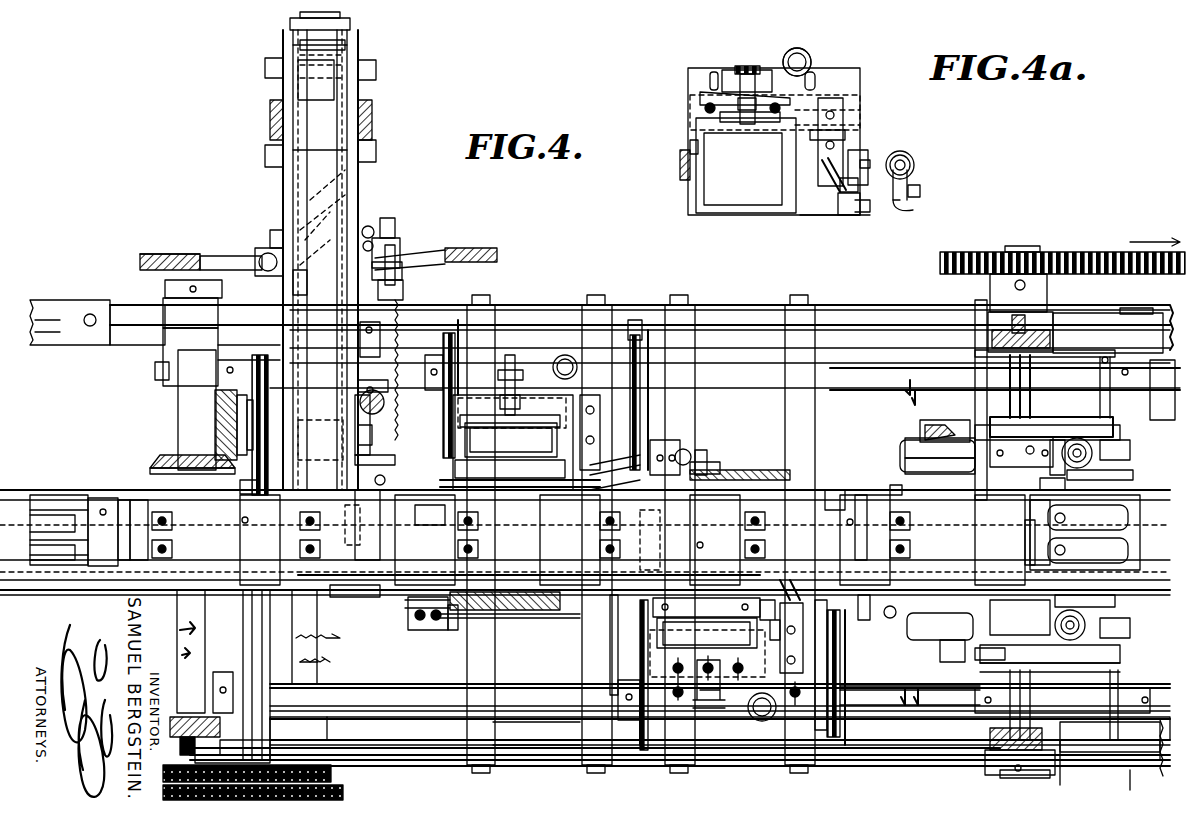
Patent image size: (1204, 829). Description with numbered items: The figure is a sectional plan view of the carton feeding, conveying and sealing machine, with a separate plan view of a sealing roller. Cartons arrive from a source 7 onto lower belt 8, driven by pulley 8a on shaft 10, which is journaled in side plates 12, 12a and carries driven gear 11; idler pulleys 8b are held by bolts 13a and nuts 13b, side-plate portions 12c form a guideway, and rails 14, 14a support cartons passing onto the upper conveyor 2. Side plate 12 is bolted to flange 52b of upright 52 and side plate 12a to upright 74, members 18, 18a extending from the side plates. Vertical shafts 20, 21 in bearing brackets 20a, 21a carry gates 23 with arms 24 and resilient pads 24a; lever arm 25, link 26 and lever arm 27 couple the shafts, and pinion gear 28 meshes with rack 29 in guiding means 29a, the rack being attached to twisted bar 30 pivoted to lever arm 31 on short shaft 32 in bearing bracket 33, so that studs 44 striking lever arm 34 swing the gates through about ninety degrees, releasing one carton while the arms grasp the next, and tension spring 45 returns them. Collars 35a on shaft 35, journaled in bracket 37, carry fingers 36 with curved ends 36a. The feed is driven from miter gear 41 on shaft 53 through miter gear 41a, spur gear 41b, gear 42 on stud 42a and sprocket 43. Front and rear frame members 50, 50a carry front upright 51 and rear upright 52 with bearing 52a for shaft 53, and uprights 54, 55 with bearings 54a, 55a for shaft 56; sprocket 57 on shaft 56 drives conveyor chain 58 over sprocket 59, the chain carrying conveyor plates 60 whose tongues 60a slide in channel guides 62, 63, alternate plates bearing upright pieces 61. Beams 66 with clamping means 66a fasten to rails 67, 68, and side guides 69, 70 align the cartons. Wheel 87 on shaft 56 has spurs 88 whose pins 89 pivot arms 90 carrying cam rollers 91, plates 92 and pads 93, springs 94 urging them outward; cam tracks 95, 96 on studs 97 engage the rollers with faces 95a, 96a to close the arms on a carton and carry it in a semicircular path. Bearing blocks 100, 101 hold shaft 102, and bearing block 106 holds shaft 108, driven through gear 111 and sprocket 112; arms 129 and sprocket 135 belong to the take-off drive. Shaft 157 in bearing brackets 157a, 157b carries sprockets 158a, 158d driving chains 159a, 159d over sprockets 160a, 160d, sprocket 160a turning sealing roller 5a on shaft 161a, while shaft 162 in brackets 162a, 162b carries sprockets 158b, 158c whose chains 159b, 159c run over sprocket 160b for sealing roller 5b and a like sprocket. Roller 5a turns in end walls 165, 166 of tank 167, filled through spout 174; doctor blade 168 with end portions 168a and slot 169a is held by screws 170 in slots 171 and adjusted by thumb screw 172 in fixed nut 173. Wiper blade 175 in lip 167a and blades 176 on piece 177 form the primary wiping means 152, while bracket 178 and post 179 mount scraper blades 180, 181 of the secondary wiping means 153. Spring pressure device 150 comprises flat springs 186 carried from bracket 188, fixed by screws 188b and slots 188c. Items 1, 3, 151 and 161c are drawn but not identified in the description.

In FIG. 4, the machine frame 1 is at (268, 158).
In FIG. 4, the upper conveyor 2 is at (392, 605).
In FIG. 4, the folding device 3 is at (915, 425).
In FIG. 4, the sealing roller 5a is at (511, 440).
In FIG. 4a, the sealing roller 5a is at (743, 169).
In FIG. 4, the sealing roller 5b is at (707, 647).
In FIG. 4, the conveyor or other source 7 is at (293, 22).
In FIG. 4, the lower belt 8 is at (375, 150).
In FIG. 4, the pulley 8a is at (360, 405).
In FIG. 4, the adjustable idler pulleys 8b is at (355, 45).
In FIG. 4, the shaft 10 is at (320, 438).
In FIG. 4, the driven gear 11 is at (255, 490).
In FIG. 4, the side plate 12 is at (283, 176).
In FIG. 4, the side plate 12a is at (360, 175).
In FIG. 4, the side plate portions 12c is at (283, 84).
In FIG. 4, the bolts 13a is at (375, 70).
In FIG. 4, the nuts 13b is at (268, 68).
In FIG. 4, the rail 14 is at (290, 38).
In FIG. 4, the rail 14a is at (358, 34).
In FIG. 4, the support member 18 is at (270, 120).
In FIG. 4, the support member 18a is at (372, 118).
In FIG. 4, the vertical shaft 20 is at (270, 250).
In FIG. 4, the bearing brackets 20a is at (275, 235).
In FIG. 4, the vertical shaft 21 is at (400, 270).
In FIG. 4, the bearing brackets 21a is at (398, 288).
In FIG. 4, the fingers or gates 23 is at (300, 280).
In FIG. 4, the arms 24 is at (140, 255).
In FIG. 4, the pads 24a is at (172, 252).
In FIG. 4, the lever arm 25 is at (317, 219).
In FIG. 4, the link 26 is at (316, 244).
In FIG. 4, the lever arm 27 is at (368, 225).
In FIG. 4, the pinion gear 28 is at (392, 240).
In FIG. 4, the rack 29 is at (395, 222).
In FIG. 4, the guiding means 29a is at (398, 248).
In FIG. 4, the twisted bar 30 is at (405, 340).
In FIG. 4, the lever arm 31 is at (377, 453).
In FIG. 4, the short shaft 32 is at (392, 478).
In FIG. 4, the bearing bracket 33 is at (380, 525).
In FIG. 4, the lever arm 34 is at (367, 522).
In FIG. 4, the vertical shaft 35 is at (360, 395).
In FIG. 4, the collars 35a is at (372, 390).
In FIG. 4, the arms or fingers 36 is at (372, 436).
In FIG. 4, the curved end portions 36a is at (465, 385).
In FIG. 4, the bearing bracket 37 is at (360, 385).
In FIG. 4, the miter gear 41 is at (160, 455).
In FIG. 4, the miter gear 41a is at (215, 420).
In FIG. 4, the spur gear 41b is at (228, 345).
In FIG. 4, the gear 42 is at (228, 380).
In FIG. 4, the stud 42a is at (215, 440).
In FIG. 4, the sprocket 43 is at (215, 398).
In FIG. 4, the studs 44 is at (250, 515).
In FIG. 4, the tension spring 45 is at (432, 515).
In FIG. 4, the front frame member 50 is at (900, 765).
In FIG. 4, the rear frame member 50a is at (115, 303).
In FIG. 4, the front upright 51 is at (205, 670).
In FIG. 4, the rear upright 52 is at (162, 338).
In FIG. 4, the bearing 52a is at (165, 312).
In FIG. 4, the flange 52b is at (225, 312).
In FIG. 4, the shaft 53 is at (170, 285).
In FIG. 4, the upright member 54 is at (990, 775).
In FIG. 4, the bearing 54a is at (1010, 778).
In FIG. 4, the upright member 55 is at (1040, 340).
In FIG. 4, the bearing 55a is at (990, 300).
In FIG. 4, the shaft 56 is at (1030, 246).
In FIG. 4, the sprocket 57 is at (1030, 535).
In FIG. 4, the upper conveyor chain 58 is at (118, 500).
In FIG. 4, the left-hand sprocket 59 is at (140, 500).
In FIG. 4, the conveyor plates 60 is at (88, 510).
In FIG. 4, the tongues 60a is at (92, 500).
In FIG. 4, the upright pieces 61 is at (40, 520).
In FIG. 4, the side guide 62 is at (340, 590).
In FIG. 4, the side guide 63 is at (840, 490).
In FIG. 4, the transverse bars or beams 66 is at (580, 678).
In FIG. 4, the clamping means 66a is at (482, 765).
In FIG. 4, the frame member or rail 67 is at (530, 760).
In FIG. 4, the frame member or rail 68 is at (650, 330).
In FIG. 4, the side guide 69 is at (612, 610).
In FIG. 4, the side guide 70 is at (898, 490).
In FIG. 4, the upright frame member 74 is at (360, 337).
In FIG. 4, the wheel 87 is at (1035, 440).
In FIG. 4, the spurs 88 is at (1045, 475).
In FIG. 4, the pins 89 is at (1045, 458).
In FIG. 4, the arms 90 is at (950, 425).
In FIG. 4, the cam rollers 91 is at (1060, 435).
In FIG. 4, the plates 92 is at (905, 440).
In FIG. 4, the pads 93 is at (905, 450).
In FIG. 4, the springs 94 is at (1075, 472).
In FIG. 4, the cam plate or track 95 is at (1135, 655).
In FIG. 4, the cam face 95a is at (1030, 655).
In FIG. 4, the cam plate or track 96 is at (1135, 425).
In FIG. 4, the cam face 96a is at (985, 425).
In FIG. 4, the studs 97 is at (1050, 360).
In FIG. 4, the bearing block 100 is at (1110, 750).
In FIG. 4, the bearing block 101 is at (1120, 320).
In FIG. 4, the shaft 102 is at (1128, 312).
In FIG. 4, the bearing block 106 is at (330, 725).
In FIG. 4, the shaft 108 is at (340, 675).
In FIG. 4, the gear 111 is at (345, 770).
In FIG. 4, the sprocket 112 is at (345, 790).
In FIG. 4, the brackets or arms 129 is at (55, 300).
In FIG. 4, the sprocket 135 is at (235, 760).
In FIG. 4, the adjustable spring pressure device 150 is at (505, 620).
In FIG. 4, the plate 151 is at (607, 538).
In FIG. 4, the flat spring members 152 is at (630, 535).
In FIG. 4a, the flat spring members 152 is at (840, 215).
In FIG. 4, the secondary wiping means 153 is at (705, 455).
In FIG. 4a, the secondary wiping means 153 is at (912, 178).
In FIG. 4, the shaft 157 is at (830, 380).
In FIG. 4, the bearing bracket 157a is at (985, 355).
In FIG. 4, the bearing bracket 157b is at (158, 372).
In FIG. 4, the large sprocket 158a is at (632, 320).
In FIG. 4, the sprocket 158b is at (836, 735).
In FIG. 4, the sprocket 158c is at (645, 760).
In FIG. 4, the sprocket 158d is at (515, 360).
In FIG. 4, the chain 159a is at (660, 330).
In FIG. 4, the chain 159b is at (840, 720).
In FIG. 4, the chain 159c is at (630, 740).
In FIG. 4, the chain 159d is at (460, 320).
In FIG. 4, the sprocket 160a is at (675, 440).
In FIG. 4a, the sprocket 160a is at (870, 150).
In FIG. 4, the sprocket 160b is at (830, 655).
In FIG. 4, the lower sprocket 160d is at (513, 442).
In FIG. 4a, the shaft 161a is at (685, 160).
In FIG. 4, the pad 161c is at (640, 625).
In FIG. 4, the shaft 162 is at (500, 680).
In FIG. 4, the bearing bracket 162a is at (1040, 698).
In FIG. 4, the bearing bracket 162b is at (178, 670).
In FIG. 4a, the end wall 165 is at (850, 135).
In FIG. 4a, the end wall 166 is at (690, 148).
In FIG. 4a, the reservoir or tank 167 is at (695, 192).
In FIG. 4a, the outwardly turned lip 167a is at (875, 210).
In FIG. 4a, the doctor blade 168 is at (690, 110).
In FIG. 4a, the extended end portions 168a is at (690, 125).
In FIG. 4a, the slot 169a is at (726, 72).
In FIG. 4a, the screws 170 is at (690, 100).
In FIG. 4a, the slots 171 is at (690, 90).
In FIG. 4a, the thumb screw 172 is at (745, 66).
In FIG. 4a, the fixed nut 173 is at (730, 90).
In FIG. 4, the spout 174 is at (768, 718).
In FIG. 4a, the spout 174 is at (805, 52).
In FIG. 4a, the wiper blade 175 is at (858, 186).
In FIG. 4a, the blades 176 is at (828, 185).
In FIG. 4a, the piece 177 is at (848, 110).
In FIG. 4, the bracket 178 is at (700, 445).
In FIG. 4a, the bracket 178 is at (912, 160).
In FIG. 4, the upstanding member or post 179 is at (700, 470).
In FIG. 4a, the upstanding member or post 179 is at (900, 160).
In FIG. 4a, the scraper blade 180 is at (918, 192).
In FIG. 4a, the scraper blade 181 is at (915, 210).
In FIG. 4, the flat springs 186 is at (530, 610).
In FIG. 4, the bracket 188 is at (420, 640).
In FIG. 4, the screws 188b is at (400, 640).
In FIG. 4, the slots 188c is at (445, 640).